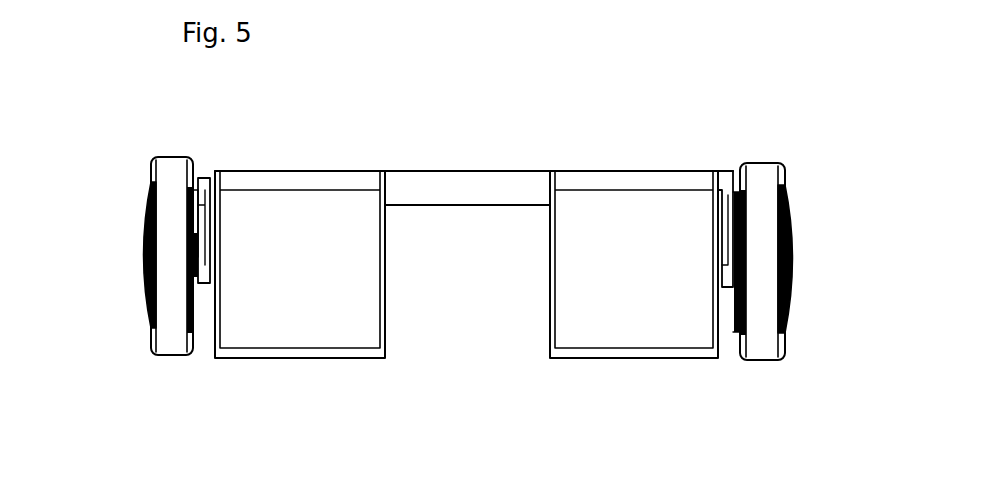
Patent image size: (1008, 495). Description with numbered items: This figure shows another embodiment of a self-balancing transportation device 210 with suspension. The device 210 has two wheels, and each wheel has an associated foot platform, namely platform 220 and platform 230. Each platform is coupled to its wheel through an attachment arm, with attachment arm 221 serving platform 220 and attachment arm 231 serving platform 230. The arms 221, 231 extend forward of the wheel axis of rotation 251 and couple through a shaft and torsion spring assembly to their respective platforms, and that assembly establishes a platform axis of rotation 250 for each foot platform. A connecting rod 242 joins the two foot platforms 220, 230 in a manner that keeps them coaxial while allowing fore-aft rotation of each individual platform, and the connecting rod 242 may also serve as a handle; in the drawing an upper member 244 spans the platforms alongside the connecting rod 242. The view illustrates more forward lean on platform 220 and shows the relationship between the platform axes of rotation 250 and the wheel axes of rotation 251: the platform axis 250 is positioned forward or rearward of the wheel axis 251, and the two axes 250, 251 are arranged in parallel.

The self-balancing transportation device 210 is at (358, 410).
The platform 220 is at (648, 300).
The attachment arm 221 is at (728, 227).
The platform 230 is at (297, 303).
The attachment arm 231 is at (203, 222).
The connecting rod 242 is at (470, 172).
The top bar 244 is at (643, 172).
The platform axis of rotation 250 is at (90, 187).
The wheel axis of rotation 251 is at (133, 260).